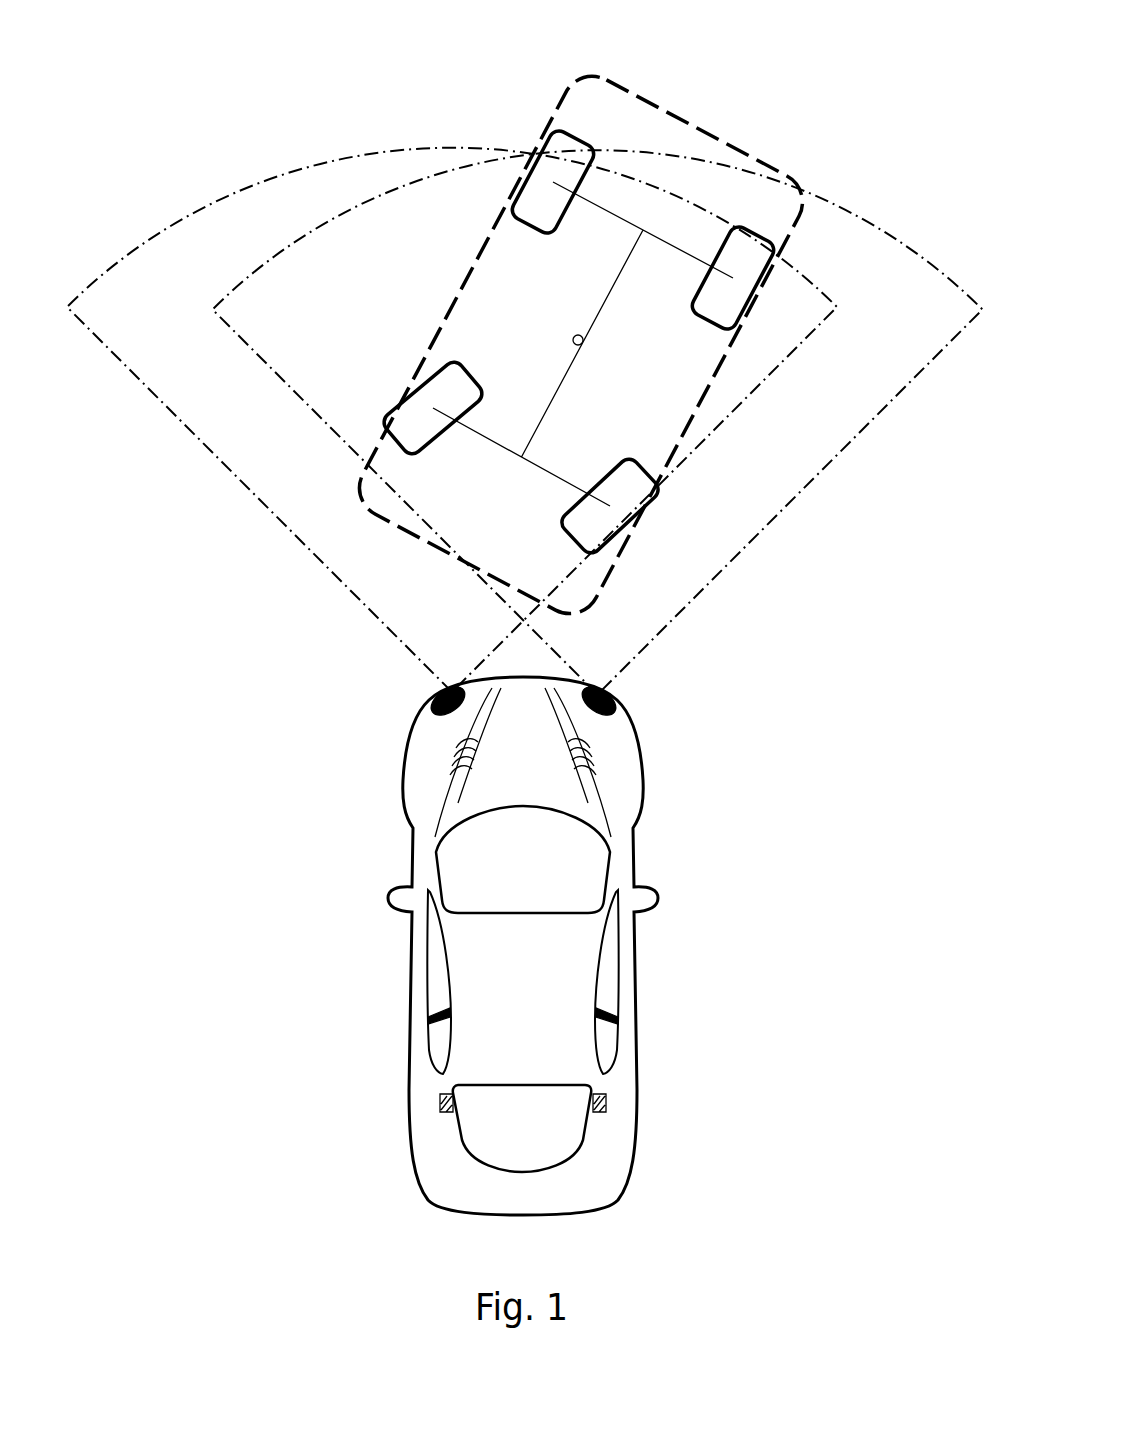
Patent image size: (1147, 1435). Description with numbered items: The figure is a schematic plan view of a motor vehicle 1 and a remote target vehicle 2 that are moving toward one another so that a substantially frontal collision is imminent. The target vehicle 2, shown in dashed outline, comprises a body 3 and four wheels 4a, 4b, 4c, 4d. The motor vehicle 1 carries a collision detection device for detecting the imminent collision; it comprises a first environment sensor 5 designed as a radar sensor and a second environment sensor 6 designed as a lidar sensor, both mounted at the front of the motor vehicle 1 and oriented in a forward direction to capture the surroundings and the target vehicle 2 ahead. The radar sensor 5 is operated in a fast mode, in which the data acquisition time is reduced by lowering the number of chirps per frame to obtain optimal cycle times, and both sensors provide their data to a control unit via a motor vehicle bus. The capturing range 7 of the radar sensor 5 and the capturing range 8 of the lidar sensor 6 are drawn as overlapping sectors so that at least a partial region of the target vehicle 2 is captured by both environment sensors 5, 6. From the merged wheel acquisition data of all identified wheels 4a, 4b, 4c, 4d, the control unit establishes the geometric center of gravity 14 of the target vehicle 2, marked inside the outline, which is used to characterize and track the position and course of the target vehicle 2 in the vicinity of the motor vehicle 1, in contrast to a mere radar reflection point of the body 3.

The motor vehicle 1 is at (717, 822).
The remote target vehicle 2 is at (518, 78).
The body 3 is at (737, 147).
The wheel 4a is at (440, 366).
The wheel 4b is at (630, 457).
The wheel 4c is at (548, 135).
The wheel 4d is at (774, 246).
The first environment sensor 5 is at (440, 700).
The second environment sensor 6 is at (613, 700).
The capturing range 7 is at (316, 552).
The capturing range 8 is at (792, 500).
The geometric center of gravity 14 is at (574, 336).